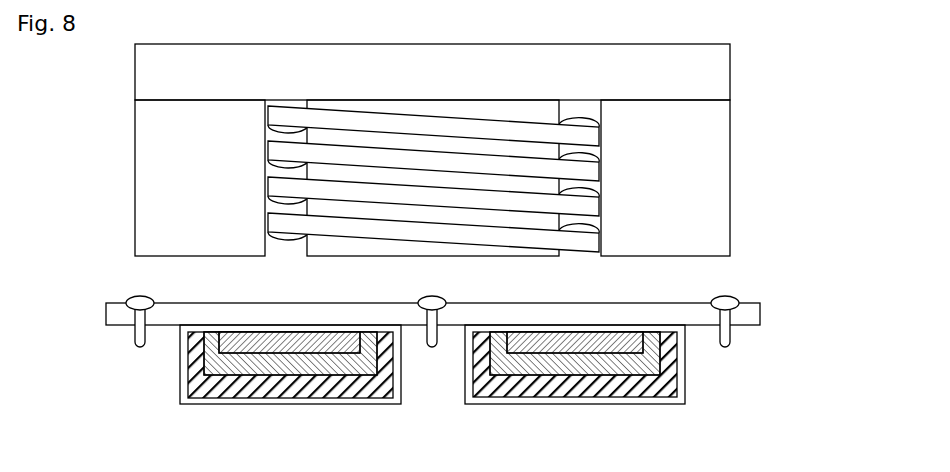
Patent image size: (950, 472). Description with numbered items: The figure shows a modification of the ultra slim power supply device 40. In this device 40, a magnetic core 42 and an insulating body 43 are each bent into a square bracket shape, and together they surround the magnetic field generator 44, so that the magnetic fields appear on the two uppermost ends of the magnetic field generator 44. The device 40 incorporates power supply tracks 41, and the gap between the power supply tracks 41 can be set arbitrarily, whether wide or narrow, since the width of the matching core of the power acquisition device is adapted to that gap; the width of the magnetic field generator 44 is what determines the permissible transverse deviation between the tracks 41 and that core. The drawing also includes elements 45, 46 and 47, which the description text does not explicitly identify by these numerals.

The ultra slim power supply device 40 is at (424, 362).
The power supply track 41 is at (609, 396).
The magnetic core 42 is at (553, 390).
The insulating body 43 is at (597, 362).
The magnetic field generator 44 is at (630, 354).
The package housing 45 is at (685, 375).
The circuit board 46 is at (758, 310).
The pin 47 is at (722, 297).